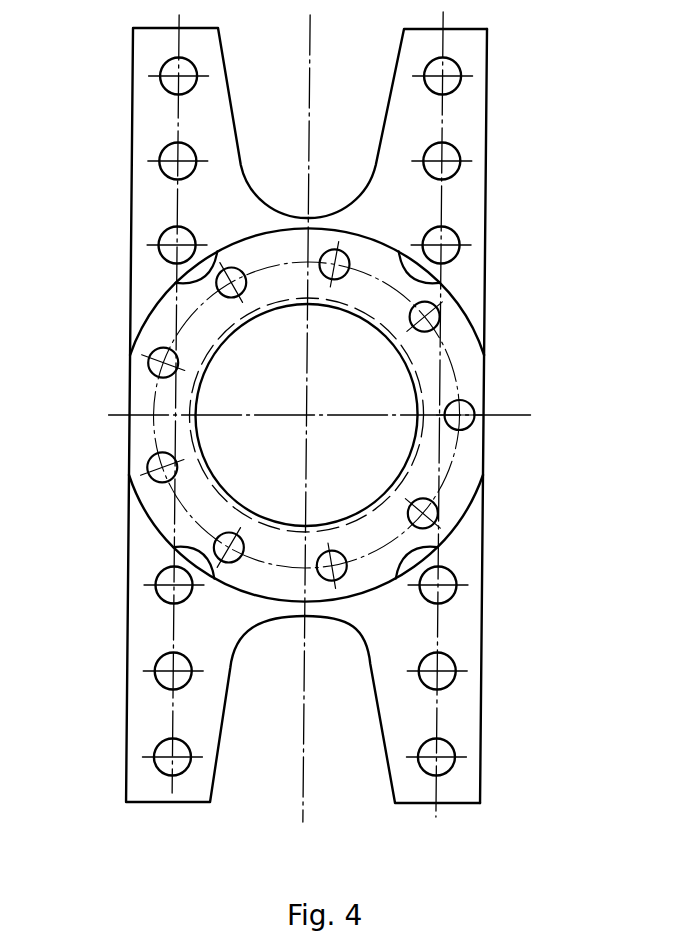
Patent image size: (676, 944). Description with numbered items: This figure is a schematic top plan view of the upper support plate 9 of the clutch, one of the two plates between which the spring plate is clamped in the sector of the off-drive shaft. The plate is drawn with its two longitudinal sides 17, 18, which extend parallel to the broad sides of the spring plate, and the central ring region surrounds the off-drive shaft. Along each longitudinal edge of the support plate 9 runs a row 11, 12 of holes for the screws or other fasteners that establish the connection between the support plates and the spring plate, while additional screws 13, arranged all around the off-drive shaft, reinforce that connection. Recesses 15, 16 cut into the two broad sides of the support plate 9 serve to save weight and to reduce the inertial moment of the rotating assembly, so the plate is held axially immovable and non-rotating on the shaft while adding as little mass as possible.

The upper support plate 9 is at (465, 382).
The row of screws 11 is at (165, 677).
The row of screws 12 is at (450, 156).
The additional screws 13 is at (163, 363).
The recess 15 is at (350, 108).
The recess 16 is at (348, 729).
The longitudinal side 17 is at (132, 503).
The longitudinal side 18 is at (483, 525).